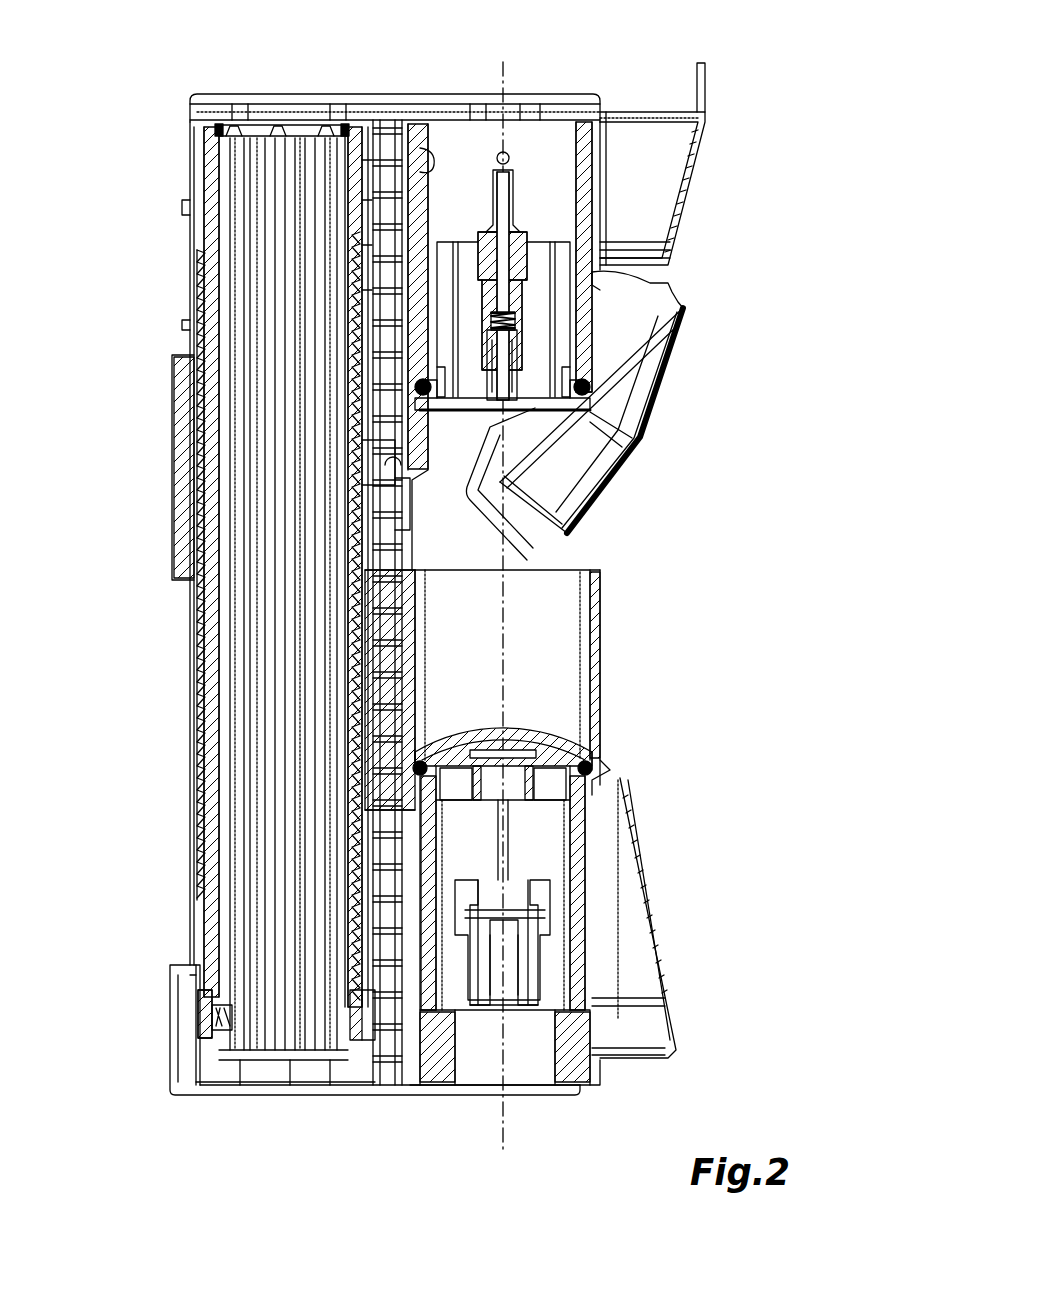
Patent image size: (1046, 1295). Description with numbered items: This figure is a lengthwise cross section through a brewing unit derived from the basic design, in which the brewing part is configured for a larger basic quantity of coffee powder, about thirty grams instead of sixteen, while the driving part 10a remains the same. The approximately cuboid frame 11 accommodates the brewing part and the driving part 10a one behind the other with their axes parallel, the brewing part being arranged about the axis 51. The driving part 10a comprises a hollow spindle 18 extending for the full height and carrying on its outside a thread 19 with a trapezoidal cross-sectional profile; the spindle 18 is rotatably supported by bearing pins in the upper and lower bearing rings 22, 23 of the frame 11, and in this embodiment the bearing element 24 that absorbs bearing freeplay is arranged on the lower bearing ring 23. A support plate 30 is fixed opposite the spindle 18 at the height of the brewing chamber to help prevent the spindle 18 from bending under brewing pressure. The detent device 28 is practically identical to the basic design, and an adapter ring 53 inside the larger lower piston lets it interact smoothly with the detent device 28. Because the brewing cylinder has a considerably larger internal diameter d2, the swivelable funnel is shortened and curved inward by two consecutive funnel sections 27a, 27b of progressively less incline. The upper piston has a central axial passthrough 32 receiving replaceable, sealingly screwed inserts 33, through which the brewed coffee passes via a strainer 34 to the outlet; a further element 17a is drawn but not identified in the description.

The driving part 10a is at (390, 1108).
The frame 11 is at (315, 106).
The serration 17a is at (355, 744).
The spindle 18 is at (268, 648).
The thread 19 is at (206, 302).
The upper bearing ring 22 is at (205, 152).
The lower bearing ring 23 is at (202, 1002).
The bearing element 24 is at (200, 1042).
The upper funnel section 27a is at (636, 412).
The lower funnel section 27b is at (588, 506).
The detent device 28 is at (604, 945).
The support plate 30 is at (180, 548).
The axial passthrough 32 is at (506, 330).
The replaceable insert 33 is at (608, 215).
The strainer 34 is at (392, 430).
The axis 51 is at (506, 74).
The adapter ring 53 is at (577, 990).
The internal diameter d2 is at (585, 710).